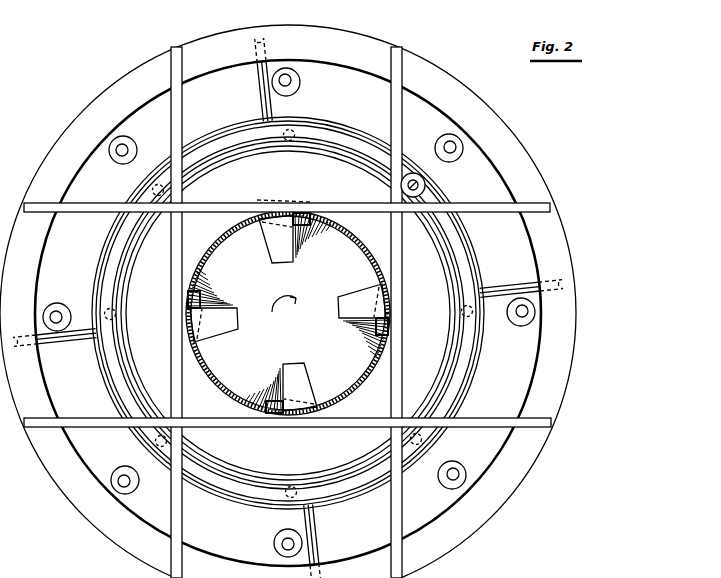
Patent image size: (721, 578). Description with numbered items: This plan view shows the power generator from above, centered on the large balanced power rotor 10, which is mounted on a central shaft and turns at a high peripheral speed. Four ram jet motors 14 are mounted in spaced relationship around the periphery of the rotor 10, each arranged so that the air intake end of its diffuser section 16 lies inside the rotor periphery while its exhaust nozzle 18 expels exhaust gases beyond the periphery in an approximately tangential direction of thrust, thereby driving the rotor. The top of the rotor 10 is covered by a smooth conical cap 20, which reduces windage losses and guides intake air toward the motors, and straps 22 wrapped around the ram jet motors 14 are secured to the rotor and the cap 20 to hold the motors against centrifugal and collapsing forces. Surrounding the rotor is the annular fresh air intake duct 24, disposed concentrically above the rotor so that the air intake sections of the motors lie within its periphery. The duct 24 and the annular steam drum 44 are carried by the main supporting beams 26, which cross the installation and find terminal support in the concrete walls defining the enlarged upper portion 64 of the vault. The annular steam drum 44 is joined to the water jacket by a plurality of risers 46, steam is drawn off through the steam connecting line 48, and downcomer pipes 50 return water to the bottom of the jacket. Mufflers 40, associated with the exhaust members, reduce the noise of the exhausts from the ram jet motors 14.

The power rotor 10 is at (207, 247).
The ram jet motor 14 is at (268, 233).
The diffuser section 16 is at (302, 220).
The exhaust nozzle 18 is at (257, 200).
The conical cap 20 is at (298, 331).
The strap 22 is at (273, 265).
The annular fresh air intake duct 24 is at (348, 232).
The supporting beam 26 is at (218, 208).
The muffler 40 is at (300, 84).
The annular steam drum 44 is at (231, 132).
The riser 46 is at (293, 133).
The steam connecting line 48 is at (427, 182).
The downcomer pipe 50 is at (255, 75).
The upper portion of vault 64 is at (523, 463).